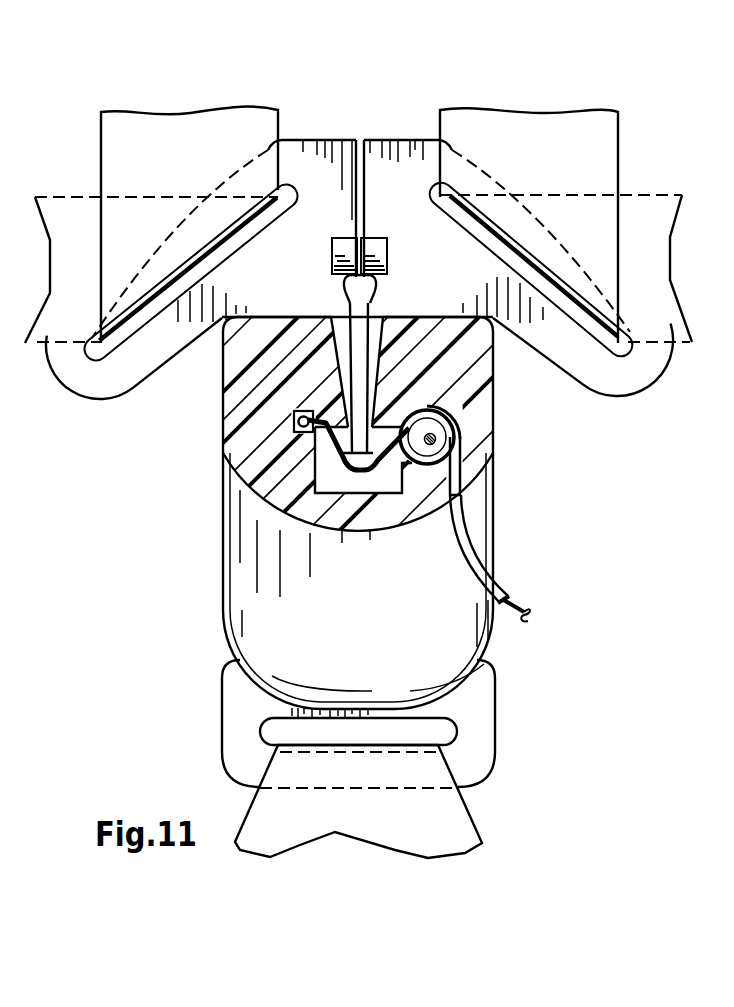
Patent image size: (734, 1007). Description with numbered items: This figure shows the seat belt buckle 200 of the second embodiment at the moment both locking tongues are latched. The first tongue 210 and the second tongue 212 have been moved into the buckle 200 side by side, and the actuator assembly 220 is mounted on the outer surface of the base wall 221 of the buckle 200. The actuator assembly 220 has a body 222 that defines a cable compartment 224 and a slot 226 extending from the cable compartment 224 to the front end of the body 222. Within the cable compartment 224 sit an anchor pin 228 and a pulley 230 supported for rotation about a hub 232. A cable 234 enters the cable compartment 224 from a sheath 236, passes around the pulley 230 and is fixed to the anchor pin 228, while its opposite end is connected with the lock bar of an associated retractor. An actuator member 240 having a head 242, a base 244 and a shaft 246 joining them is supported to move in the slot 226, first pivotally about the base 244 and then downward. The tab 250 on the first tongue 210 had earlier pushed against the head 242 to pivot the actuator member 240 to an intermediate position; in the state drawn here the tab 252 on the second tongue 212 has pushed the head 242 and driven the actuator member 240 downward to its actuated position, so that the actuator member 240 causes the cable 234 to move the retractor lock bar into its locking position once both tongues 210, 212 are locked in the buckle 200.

The seat belt buckle 200 is at (296, 587).
The first tongue 210 is at (331, 120).
The second tongue 212 is at (386, 120).
The actuator assembly 220 is at (319, 427).
The base wall 221 is at (272, 610).
The body 222 is at (262, 407).
The cable compartment 224 is at (328, 481).
The slot 226 is at (330, 300).
The anchor pin 228 is at (294, 421).
The pulley 230 is at (441, 430).
The hub 232 is at (437, 442).
The cable 234 is at (505, 601).
The sheath 236 is at (460, 550).
The actuator member 240 is at (403, 352).
The head 242 is at (352, 283).
The base 244 is at (362, 470).
The shaft 246 is at (357, 360).
The tab 250 is at (331, 266).
The tab 252 is at (387, 268).